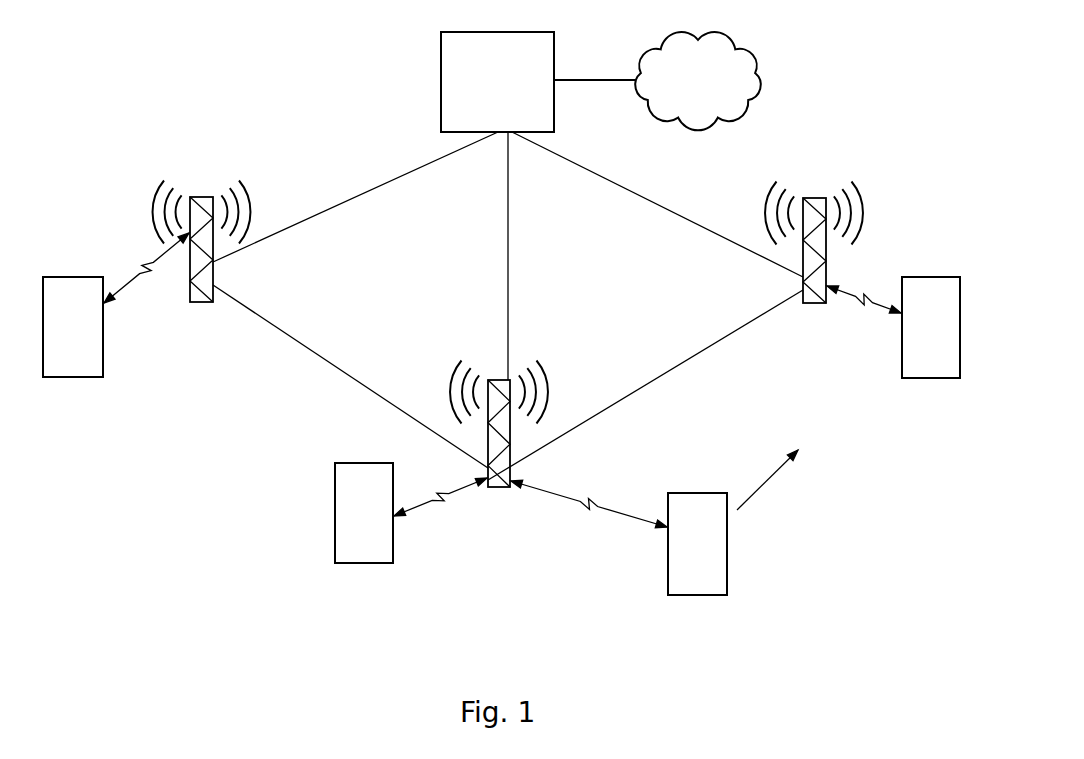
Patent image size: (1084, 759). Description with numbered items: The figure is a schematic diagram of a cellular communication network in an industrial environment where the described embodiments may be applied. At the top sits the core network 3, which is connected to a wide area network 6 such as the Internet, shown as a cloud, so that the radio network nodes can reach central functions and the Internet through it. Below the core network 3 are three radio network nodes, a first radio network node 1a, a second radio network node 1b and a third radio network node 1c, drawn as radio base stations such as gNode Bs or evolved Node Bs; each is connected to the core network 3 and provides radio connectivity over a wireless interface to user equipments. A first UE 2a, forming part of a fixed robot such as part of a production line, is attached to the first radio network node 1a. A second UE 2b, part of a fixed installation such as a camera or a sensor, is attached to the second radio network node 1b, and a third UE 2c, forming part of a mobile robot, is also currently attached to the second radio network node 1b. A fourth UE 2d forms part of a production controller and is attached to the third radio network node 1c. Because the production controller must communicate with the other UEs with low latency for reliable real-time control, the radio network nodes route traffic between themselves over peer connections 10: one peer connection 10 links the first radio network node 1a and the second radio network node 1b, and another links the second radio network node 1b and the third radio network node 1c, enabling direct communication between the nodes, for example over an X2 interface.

The core network 3 is at (489, 78).
The wide area network 6 is at (689, 92).
The peer connection 10 is at (352, 380).
The first radio network node 1a is at (214, 268).
The second radio network node 1b is at (511, 440).
The third radio network node 1c is at (827, 253).
The first UE 2a is at (70, 277).
The second UE 2b is at (370, 563).
The third UE 2c is at (698, 595).
The fourth UE 2d is at (936, 378).